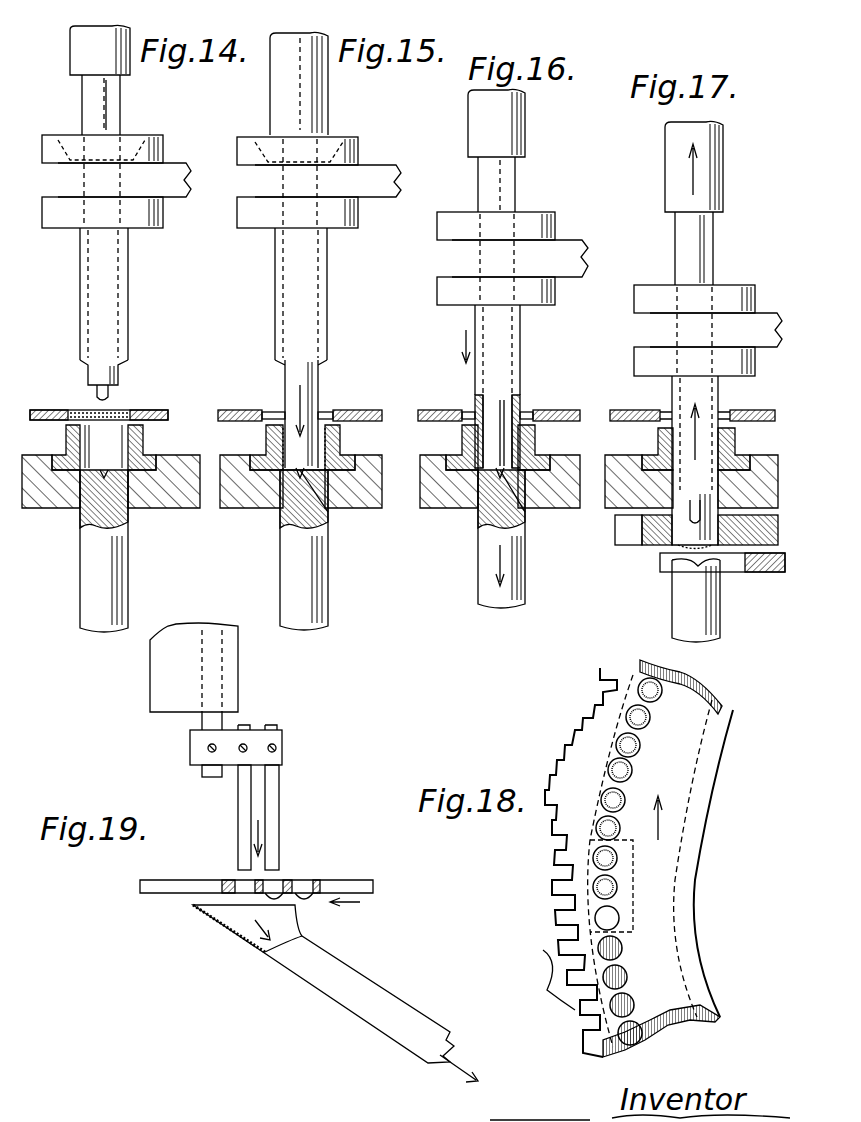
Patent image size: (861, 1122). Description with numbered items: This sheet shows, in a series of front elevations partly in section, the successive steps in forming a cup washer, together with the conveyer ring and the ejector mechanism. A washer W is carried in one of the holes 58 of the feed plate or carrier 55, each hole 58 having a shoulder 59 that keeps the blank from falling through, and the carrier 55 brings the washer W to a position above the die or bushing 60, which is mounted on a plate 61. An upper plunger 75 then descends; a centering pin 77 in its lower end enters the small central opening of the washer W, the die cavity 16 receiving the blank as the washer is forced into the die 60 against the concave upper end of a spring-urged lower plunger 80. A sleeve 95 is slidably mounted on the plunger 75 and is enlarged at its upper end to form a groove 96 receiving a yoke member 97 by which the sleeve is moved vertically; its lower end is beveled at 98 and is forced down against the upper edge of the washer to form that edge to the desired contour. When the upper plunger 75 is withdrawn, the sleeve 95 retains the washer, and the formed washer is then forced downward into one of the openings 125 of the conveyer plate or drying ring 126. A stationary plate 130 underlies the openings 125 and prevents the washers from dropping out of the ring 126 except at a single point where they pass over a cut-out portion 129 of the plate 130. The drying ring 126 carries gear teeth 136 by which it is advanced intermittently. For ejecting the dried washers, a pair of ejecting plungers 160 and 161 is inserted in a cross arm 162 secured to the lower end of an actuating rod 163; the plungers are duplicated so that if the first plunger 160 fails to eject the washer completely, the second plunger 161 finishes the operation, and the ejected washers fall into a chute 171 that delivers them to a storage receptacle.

In FIG. 14, the upper plunger 75 is at (92, 108).
In FIG. 15, the upper plunger 75 is at (280, 108).
In FIG. 16, the upper plunger 75 is at (508, 182).
In FIG. 17, the upper plunger 75 is at (706, 248).
In FIG. 14, the centering pin 77 is at (97, 392).
In FIG. 15, the centering pin 77 is at (328, 525).
In FIG. 16, the centering pin 77 is at (525, 518).
In FIG. 14, the lower plunger 80 is at (128, 573).
In FIG. 15, the lower plunger 80 is at (328, 580).
In FIG. 16, the lower plunger 80 is at (478, 578).
In FIG. 17, the lower plunger 80 is at (680, 604).
In FIG. 14, the sleeve 95 is at (128, 292).
In FIG. 15, the sleeve 95 is at (327, 292).
In FIG. 16, the sleeve 95 is at (520, 345).
In FIG. 17, the sleeve 95 is at (672, 392).
In FIG. 14, the groove 96 is at (52, 165).
In FIG. 15, the groove 96 is at (254, 165).
In FIG. 16, the groove 96 is at (452, 241).
In FIG. 17, the groove 96 is at (648, 313).
In FIG. 14, the yoke member 97 is at (190, 197).
In FIG. 15, the yoke member 97 is at (380, 168).
In FIG. 16, the yoke member 97 is at (580, 243).
In FIG. 17, the yoke member 97 is at (766, 317).
In FIG. 14, the beveled lower end 98 is at (88, 366).
In FIG. 15, the beveled lower end 98 is at (322, 360).
In FIG. 14, the die opening 16 is at (104, 420).
In FIG. 14, the washer W is at (122, 410).
In FIG. 14, the feed plate or carrier 55 is at (158, 410).
In FIG. 15, the feed plate or carrier 55 is at (236, 423).
In FIG. 16, the feed plate or carrier 55 is at (420, 423).
In FIG. 17, the feed plate or carrier 55 is at (766, 410).
In FIG. 15, the holes 58 is at (270, 412).
In FIG. 16, the holes 58 is at (525, 412).
In FIG. 15, the shoulder 59 is at (333, 412).
In FIG. 14, the die or bushing 60 is at (143, 440).
In FIG. 15, the die or bushing 60 is at (340, 442).
In FIG. 16, the die or bushing 60 is at (535, 438).
In FIG. 17, the die or bushing 60 is at (735, 440).
In FIG. 14, the plate 61 is at (168, 508).
In FIG. 15, the plate 61 is at (256, 508).
In FIG. 16, the plate 61 is at (448, 508).
In FIG. 17, the plate 61 is at (622, 462).
In FIG. 19, the openings 125 is at (240, 880).
In FIG. 18, the openings 125 is at (622, 948).
In FIG. 17, the conveyer plate or drying ring 126 is at (652, 548).
In FIG. 19, the conveyer plate or drying ring 126 is at (168, 893).
In FIG. 18, the conveyer plate or drying ring 126 is at (697, 866).
In FIG. 18, the cut-out portion 129 is at (633, 900).
In FIG. 17, the stationary plate 130 is at (772, 572).
In FIG. 18, the stationary plate 130 is at (722, 694).
In FIG. 16, the gear teeth 136 is at (596, 528).
In FIG. 17, the gear teeth 136 is at (615, 533).
In FIG. 18, the gear teeth 136 is at (566, 862).
In FIG. 19, the first ejecting plunger 160 is at (280, 840).
In FIG. 19, the second ejecting plunger 161 is at (240, 818).
In FIG. 19, the cross arm 162 is at (282, 746).
In FIG. 19, the actuating rod 163 is at (210, 777).
In FIG. 19, the chute 171 is at (330, 962).